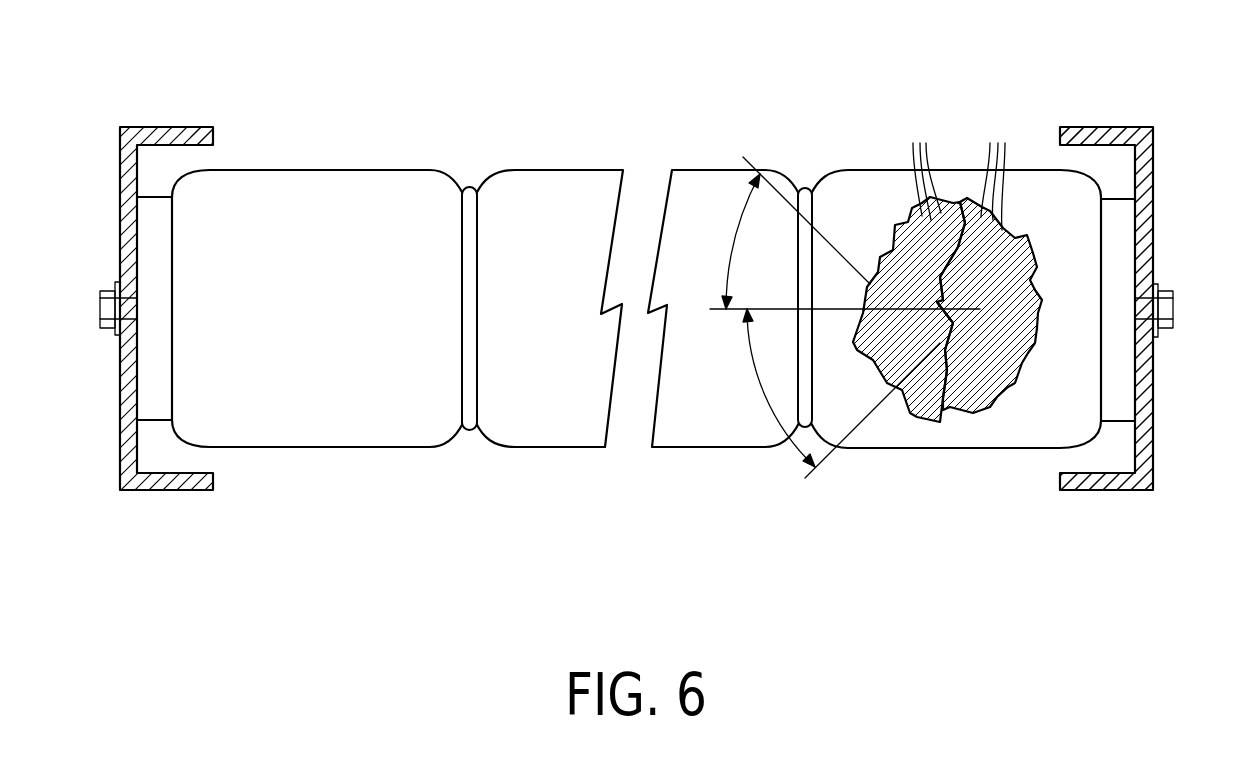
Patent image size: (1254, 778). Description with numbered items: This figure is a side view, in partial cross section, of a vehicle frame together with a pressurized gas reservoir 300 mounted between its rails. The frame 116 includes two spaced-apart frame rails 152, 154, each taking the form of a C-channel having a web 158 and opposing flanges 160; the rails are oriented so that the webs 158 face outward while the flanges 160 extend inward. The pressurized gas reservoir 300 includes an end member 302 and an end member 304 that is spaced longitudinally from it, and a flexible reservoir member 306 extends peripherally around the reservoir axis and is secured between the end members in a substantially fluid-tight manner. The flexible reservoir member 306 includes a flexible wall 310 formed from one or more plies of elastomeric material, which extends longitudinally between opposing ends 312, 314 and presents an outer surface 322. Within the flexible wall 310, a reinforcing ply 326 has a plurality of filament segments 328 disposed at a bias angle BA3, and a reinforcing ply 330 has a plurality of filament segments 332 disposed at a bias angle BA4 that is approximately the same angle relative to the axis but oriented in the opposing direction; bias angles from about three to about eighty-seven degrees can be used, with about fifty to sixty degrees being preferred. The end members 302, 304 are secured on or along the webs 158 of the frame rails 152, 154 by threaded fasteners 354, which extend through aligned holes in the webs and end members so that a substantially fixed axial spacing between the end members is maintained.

The pressurized gas reservoir 300 is at (680, 67).
The end member 302 is at (133, 200).
The end member 304 is at (1138, 197).
The frame 116 is at (1108, 92).
The frame rail 152 is at (148, 128).
The frame rail 154 is at (1130, 128).
The web 158 is at (127, 450).
The flanges 160 is at (193, 133).
The threaded fastener 354 is at (100, 310).
The flexible reservoir member 306 is at (547, 162).
The flexible wall 310 is at (583, 190).
The end 312 is at (255, 157).
The end 314 is at (1053, 155).
The outer surface 322 is at (520, 170).
The reinforcing ply 326 is at (900, 392).
The filament segments 328 is at (917, 167).
The reinforcing ply 330 is at (988, 403).
The filament segments 332 is at (997, 172).
The bias angle BA3 is at (740, 213).
The bias angle BA4 is at (768, 405).